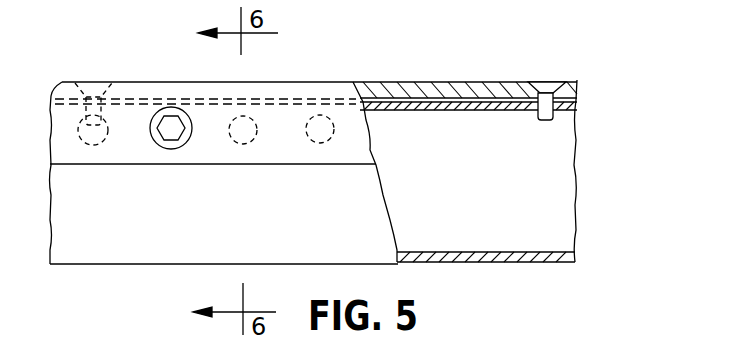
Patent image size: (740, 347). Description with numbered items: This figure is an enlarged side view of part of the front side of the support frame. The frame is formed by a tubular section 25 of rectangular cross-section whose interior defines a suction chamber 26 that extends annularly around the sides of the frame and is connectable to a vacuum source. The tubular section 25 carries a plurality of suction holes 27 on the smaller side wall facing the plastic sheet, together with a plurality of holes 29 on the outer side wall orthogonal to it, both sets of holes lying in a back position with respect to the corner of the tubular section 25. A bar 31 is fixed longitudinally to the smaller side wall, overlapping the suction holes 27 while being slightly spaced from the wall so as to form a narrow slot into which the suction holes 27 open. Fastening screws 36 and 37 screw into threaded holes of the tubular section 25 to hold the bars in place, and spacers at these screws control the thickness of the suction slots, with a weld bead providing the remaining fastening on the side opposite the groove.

The tubular section 25 is at (95, 237).
The suction chamber 26 is at (548, 208).
The suction hole 27 is at (468, 107).
The hole 29 is at (318, 108).
The bar 31 is at (401, 88).
The fastening screw 36 is at (547, 87).
The fastening screw 37 is at (168, 107).